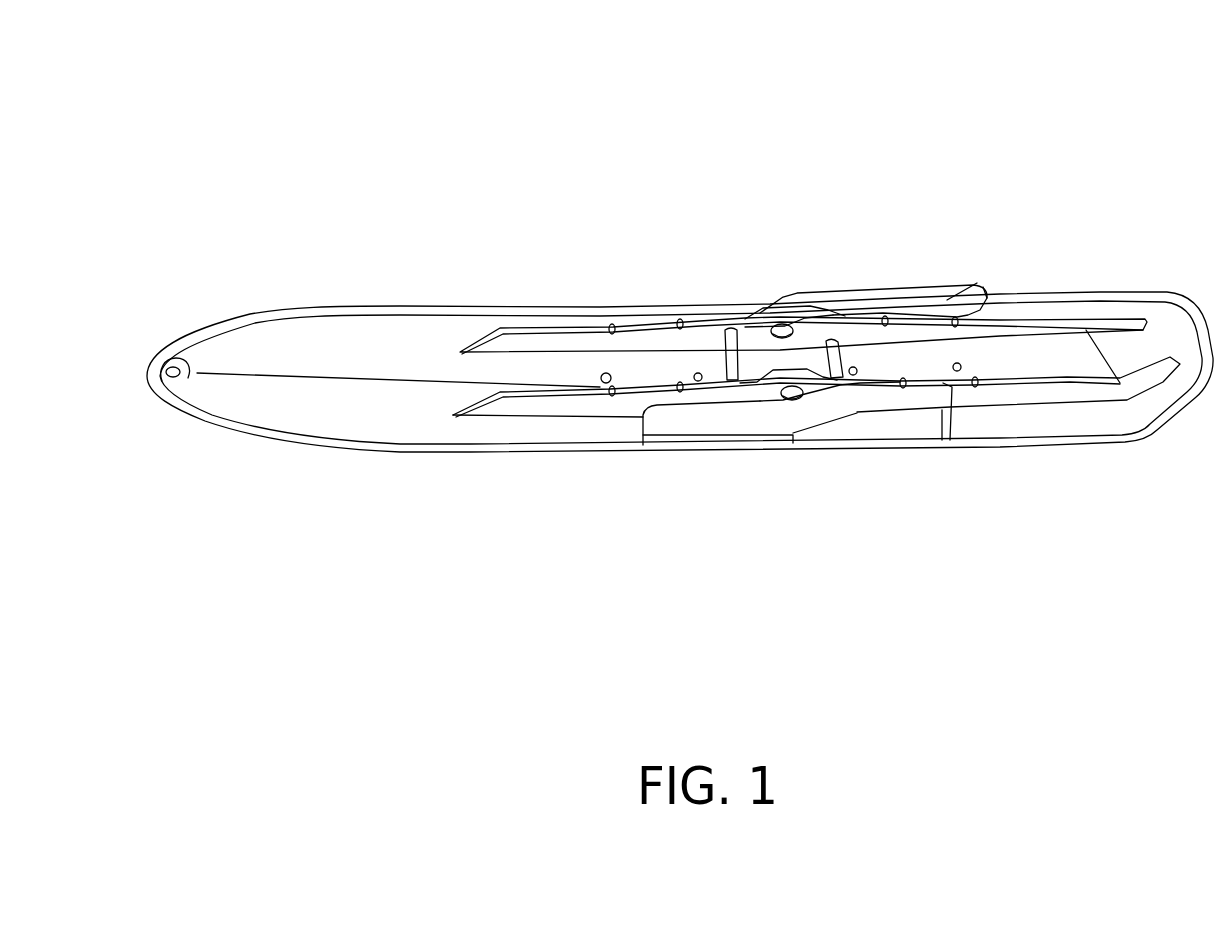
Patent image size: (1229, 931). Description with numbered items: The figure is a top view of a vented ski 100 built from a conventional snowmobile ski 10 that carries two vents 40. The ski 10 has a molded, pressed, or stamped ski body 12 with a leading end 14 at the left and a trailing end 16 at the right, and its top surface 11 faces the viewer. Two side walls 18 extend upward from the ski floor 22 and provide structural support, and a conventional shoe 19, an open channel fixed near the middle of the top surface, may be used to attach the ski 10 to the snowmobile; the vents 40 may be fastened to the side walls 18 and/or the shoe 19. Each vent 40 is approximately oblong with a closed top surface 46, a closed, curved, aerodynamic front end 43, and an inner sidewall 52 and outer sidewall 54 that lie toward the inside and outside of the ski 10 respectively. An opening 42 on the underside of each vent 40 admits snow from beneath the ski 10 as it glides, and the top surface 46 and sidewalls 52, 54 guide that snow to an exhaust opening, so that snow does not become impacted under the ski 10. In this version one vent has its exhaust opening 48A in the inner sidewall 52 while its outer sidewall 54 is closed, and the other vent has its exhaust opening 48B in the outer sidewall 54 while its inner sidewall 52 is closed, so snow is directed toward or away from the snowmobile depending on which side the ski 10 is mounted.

The vented ski 100 is at (874, 96).
The ski 10 is at (342, 305).
The top surface 11 is at (280, 350).
The ski body 12 is at (407, 380).
The leading end 14 is at (168, 358).
The trailing end 16 is at (1167, 370).
The side walls 18 is at (508, 307).
The shoe 19 is at (1083, 392).
The ski floor 22 is at (288, 397).
The vent 40 is at (903, 292).
The opening 42 is at (937, 381).
The exhaust opening 48A is at (973, 290).
The exhaust opening 48B is at (898, 432).
The front end 43 is at (657, 423).
The top surface 46 is at (950, 425).
The inner sidewall 52 is at (685, 308).
The outer sidewall 54 is at (833, 288).